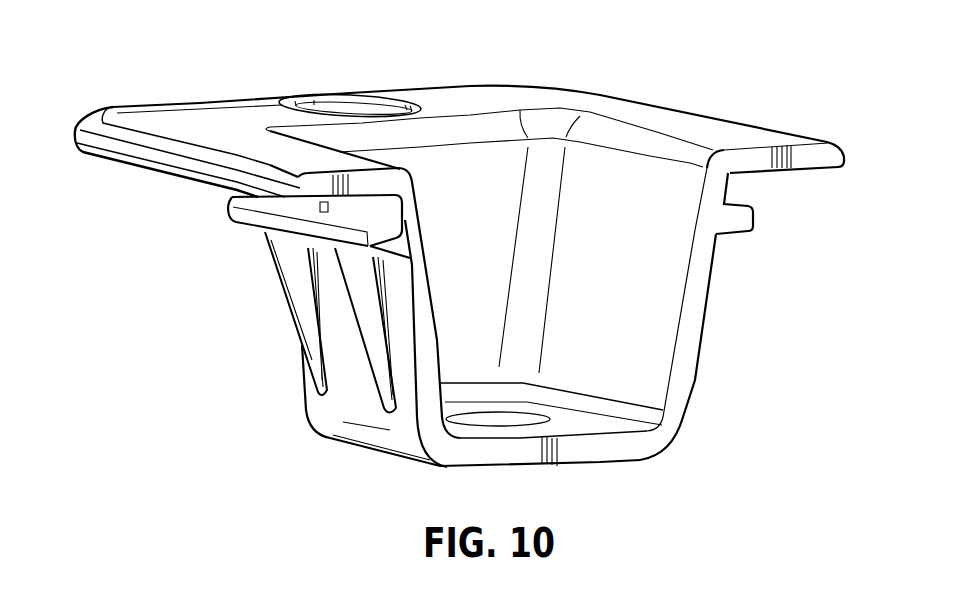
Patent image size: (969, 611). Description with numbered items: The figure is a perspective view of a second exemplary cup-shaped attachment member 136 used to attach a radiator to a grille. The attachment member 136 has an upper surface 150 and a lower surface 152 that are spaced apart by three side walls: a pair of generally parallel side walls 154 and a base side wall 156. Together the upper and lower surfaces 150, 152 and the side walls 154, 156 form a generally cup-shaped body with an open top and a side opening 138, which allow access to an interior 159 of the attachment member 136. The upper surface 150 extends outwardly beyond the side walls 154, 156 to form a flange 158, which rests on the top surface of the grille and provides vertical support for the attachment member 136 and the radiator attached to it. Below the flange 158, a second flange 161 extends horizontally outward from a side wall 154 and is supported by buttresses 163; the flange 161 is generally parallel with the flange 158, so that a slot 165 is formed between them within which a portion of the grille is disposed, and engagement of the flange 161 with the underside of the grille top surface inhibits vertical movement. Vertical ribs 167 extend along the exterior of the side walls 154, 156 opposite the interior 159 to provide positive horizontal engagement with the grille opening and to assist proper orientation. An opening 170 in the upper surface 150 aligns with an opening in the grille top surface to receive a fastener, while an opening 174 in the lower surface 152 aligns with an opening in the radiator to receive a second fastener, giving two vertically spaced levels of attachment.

The attachment member 136 is at (704, 105).
The side opening 138 is at (650, 353).
The upper surface 150 is at (513, 87).
The lower surface 152 is at (603, 425).
The side walls 154 is at (673, 383).
The base side wall 156 is at (467, 176).
The flange 158 is at (801, 163).
The interior 159 is at (597, 182).
The flange 161 is at (230, 213).
The buttresses 163 is at (377, 335).
The slot 165 is at (752, 190).
The vertical ribs 167 is at (393, 199).
The opening 170 is at (348, 98).
The opening 174 is at (530, 418).